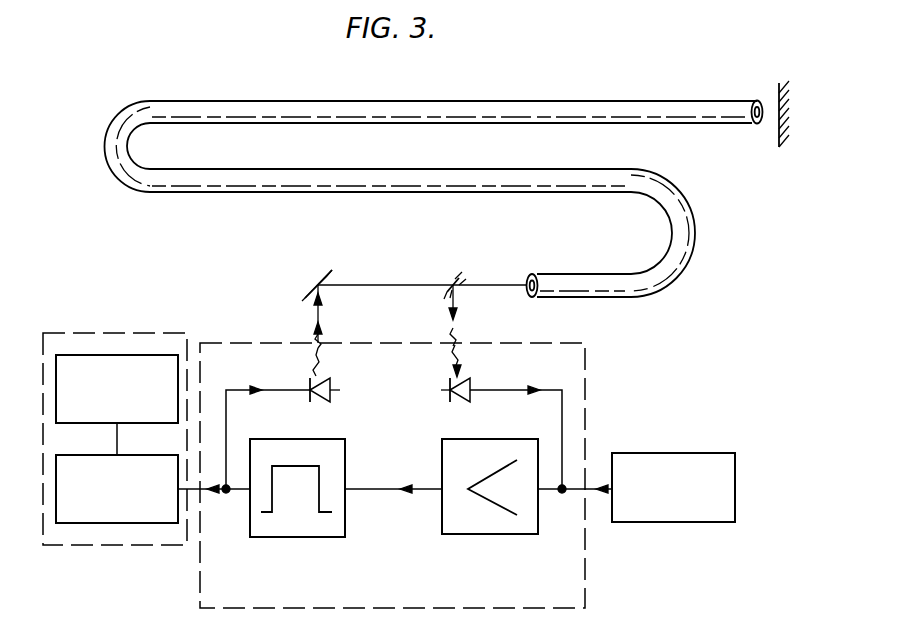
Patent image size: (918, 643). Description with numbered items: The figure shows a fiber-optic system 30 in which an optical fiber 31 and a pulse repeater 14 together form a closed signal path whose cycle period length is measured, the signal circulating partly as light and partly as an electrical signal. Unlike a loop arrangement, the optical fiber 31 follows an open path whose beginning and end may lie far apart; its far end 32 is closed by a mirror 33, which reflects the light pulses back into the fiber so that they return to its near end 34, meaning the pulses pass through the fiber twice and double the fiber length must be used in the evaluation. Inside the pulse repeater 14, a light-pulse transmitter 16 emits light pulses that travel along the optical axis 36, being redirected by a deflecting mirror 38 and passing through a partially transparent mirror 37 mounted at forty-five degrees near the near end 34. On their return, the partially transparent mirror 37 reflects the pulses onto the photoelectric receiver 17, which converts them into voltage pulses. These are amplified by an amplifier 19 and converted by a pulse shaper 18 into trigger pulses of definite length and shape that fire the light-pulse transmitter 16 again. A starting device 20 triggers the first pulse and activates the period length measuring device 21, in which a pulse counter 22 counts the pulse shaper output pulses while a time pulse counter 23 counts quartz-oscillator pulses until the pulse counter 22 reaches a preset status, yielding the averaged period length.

The pulse repeater 14 is at (585, 395).
The light-pulse transmitter 16 is at (332, 384).
The photoelectric receiver 17 is at (470, 384).
The pulse shaper 18 is at (287, 530).
The amplifier 19 is at (478, 524).
The starting device 20 is at (660, 523).
The period length measuring device 21 is at (153, 343).
The pulse counter 22 is at (157, 524).
The time pulse counter 23 is at (92, 355).
The fiber-optic system 30 is at (670, 307).
The optical fiber 31 is at (222, 186).
The far end of optical fiber 32 is at (735, 121).
The mirror 33 is at (780, 140).
The near end of optical fiber 34 is at (557, 283).
The optical axis 36 is at (503, 284).
The partially transparent mirror 37 is at (452, 284).
The deflecting mirror 38 is at (312, 284).